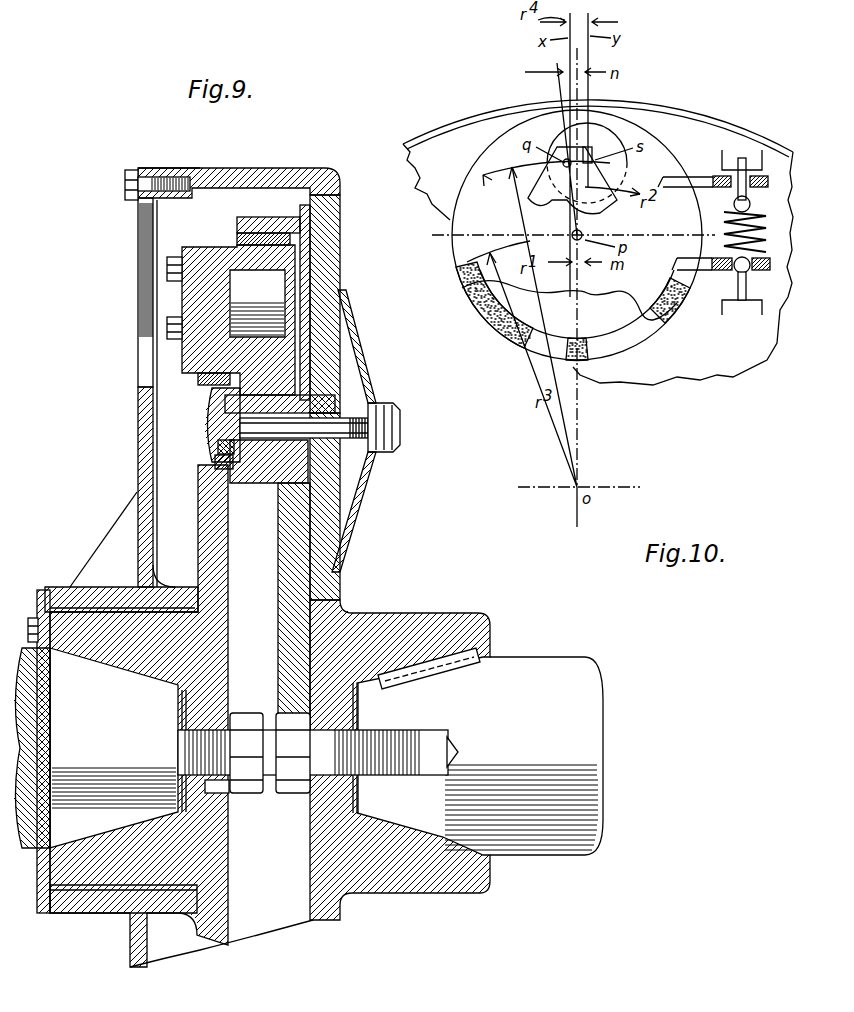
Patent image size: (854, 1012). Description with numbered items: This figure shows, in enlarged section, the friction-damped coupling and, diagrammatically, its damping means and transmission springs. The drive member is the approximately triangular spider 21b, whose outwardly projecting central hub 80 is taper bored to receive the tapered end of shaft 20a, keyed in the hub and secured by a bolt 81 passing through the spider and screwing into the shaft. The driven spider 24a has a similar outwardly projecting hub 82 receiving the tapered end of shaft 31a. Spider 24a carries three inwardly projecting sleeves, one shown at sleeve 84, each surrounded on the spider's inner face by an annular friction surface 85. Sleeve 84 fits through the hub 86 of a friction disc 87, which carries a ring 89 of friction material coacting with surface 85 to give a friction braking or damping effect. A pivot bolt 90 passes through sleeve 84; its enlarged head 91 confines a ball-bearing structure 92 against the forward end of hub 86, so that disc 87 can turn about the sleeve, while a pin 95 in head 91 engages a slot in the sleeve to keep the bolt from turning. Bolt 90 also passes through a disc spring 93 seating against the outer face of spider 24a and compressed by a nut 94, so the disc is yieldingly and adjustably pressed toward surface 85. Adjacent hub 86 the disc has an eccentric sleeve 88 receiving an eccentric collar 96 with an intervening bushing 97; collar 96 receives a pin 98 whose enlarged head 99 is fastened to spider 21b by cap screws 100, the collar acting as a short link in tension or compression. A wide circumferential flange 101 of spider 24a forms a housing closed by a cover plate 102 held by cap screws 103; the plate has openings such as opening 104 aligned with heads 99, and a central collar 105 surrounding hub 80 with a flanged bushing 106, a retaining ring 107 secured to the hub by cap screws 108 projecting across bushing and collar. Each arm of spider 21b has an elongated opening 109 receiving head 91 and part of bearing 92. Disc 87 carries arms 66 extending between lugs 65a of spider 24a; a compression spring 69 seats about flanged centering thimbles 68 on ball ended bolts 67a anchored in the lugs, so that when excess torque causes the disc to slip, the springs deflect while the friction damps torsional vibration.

In FIG. 9, the sleeve 88 is at (250, 215).
In FIG. 9, the circumferential flange 101 is at (193, 168).
In FIG. 9, the ring of friction material 89 is at (341, 224).
In FIG. 10, the ring of friction material 89 is at (507, 333).
In FIG. 9, the annular friction surface 85 is at (318, 262).
In FIG. 10, the annular friction surface 85 is at (614, 350).
In FIG. 9, the driven spider 24a is at (330, 568).
In FIG. 10, the driven spider 24a is at (690, 370).
In FIG. 9, the hub 82 is at (447, 620).
In FIG. 9, the shaft 31a is at (590, 694).
In FIG. 9, the friction disc 87 is at (282, 553).
In FIG. 10, the friction disc 87 is at (455, 198).
In FIG. 9, the opening 104 is at (143, 310).
In FIG. 9, the enlarged head 99 is at (182, 247).
In FIG. 9, the cover plate 102 is at (145, 400).
In FIG. 9, the central hub 80 is at (75, 587).
In FIG. 9, the cap screws 108 is at (38, 630).
In FIG. 9, the retaining ring 107 is at (38, 590).
In FIG. 9, the spider 21b is at (226, 965).
In FIG. 9, the shaft 20a is at (27, 847).
In FIG. 9, the central collar 105 is at (100, 905).
In FIG. 9, the flanged bushing 106 is at (72, 890).
In FIG. 9, the bolt 81 is at (232, 782).
In FIG. 9, the bushing 97 is at (272, 228).
In FIG. 9, the eccentric collar 96 is at (242, 247).
In FIG. 9, the pin 98 is at (247, 277).
In FIG. 9, the cap screws 100 is at (167, 266).
In FIG. 9, the cap screws 103 is at (125, 180).
In FIG. 9, the ball-bearing structure 92 is at (200, 378).
In FIG. 9, the enlarged head 91 is at (212, 420).
In FIG. 9, the pin 95 is at (220, 445).
In FIG. 9, the elongated opening 109 is at (205, 467).
In FIG. 9, the sleeve 84 is at (337, 388).
In FIG. 9, the pivot bolt 90 is at (347, 410).
In FIG. 9, the nut 94 is at (393, 448).
In FIG. 9, the hub 86 is at (248, 483).
In FIG. 9, the disc spring 93 is at (355, 500).
In FIG. 10, the arms 66 is at (682, 180).
In FIG. 10, the lugs 65a is at (740, 165).
In FIG. 10, the compression spring 69 is at (725, 222).
In FIG. 10, the flanged centering thimbles 68 is at (762, 268).
In FIG. 10, the ball ended bolts 67a is at (740, 283).